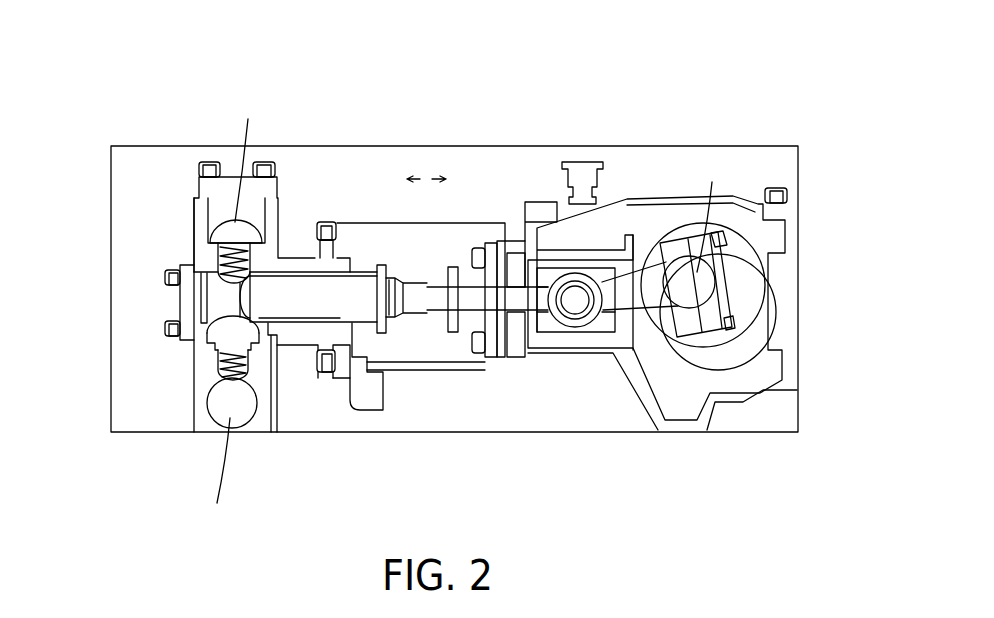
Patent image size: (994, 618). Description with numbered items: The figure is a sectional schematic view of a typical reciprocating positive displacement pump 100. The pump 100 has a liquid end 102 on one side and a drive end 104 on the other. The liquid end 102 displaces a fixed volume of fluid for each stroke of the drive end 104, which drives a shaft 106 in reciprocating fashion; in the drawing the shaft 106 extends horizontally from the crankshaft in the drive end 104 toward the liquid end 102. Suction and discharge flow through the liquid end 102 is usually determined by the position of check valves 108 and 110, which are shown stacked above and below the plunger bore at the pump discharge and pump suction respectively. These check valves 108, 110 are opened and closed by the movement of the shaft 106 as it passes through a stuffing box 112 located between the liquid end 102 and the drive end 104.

The reciprocating positive displacement pump 100 is at (538, 127).
The liquid end 102 is at (325, 312).
The drive end 104 is at (828, 218).
The shaft 106 is at (343, 300).
The check valve 108 is at (210, 232).
The check valve 110 is at (213, 358).
The stuffing box 112 is at (295, 318).